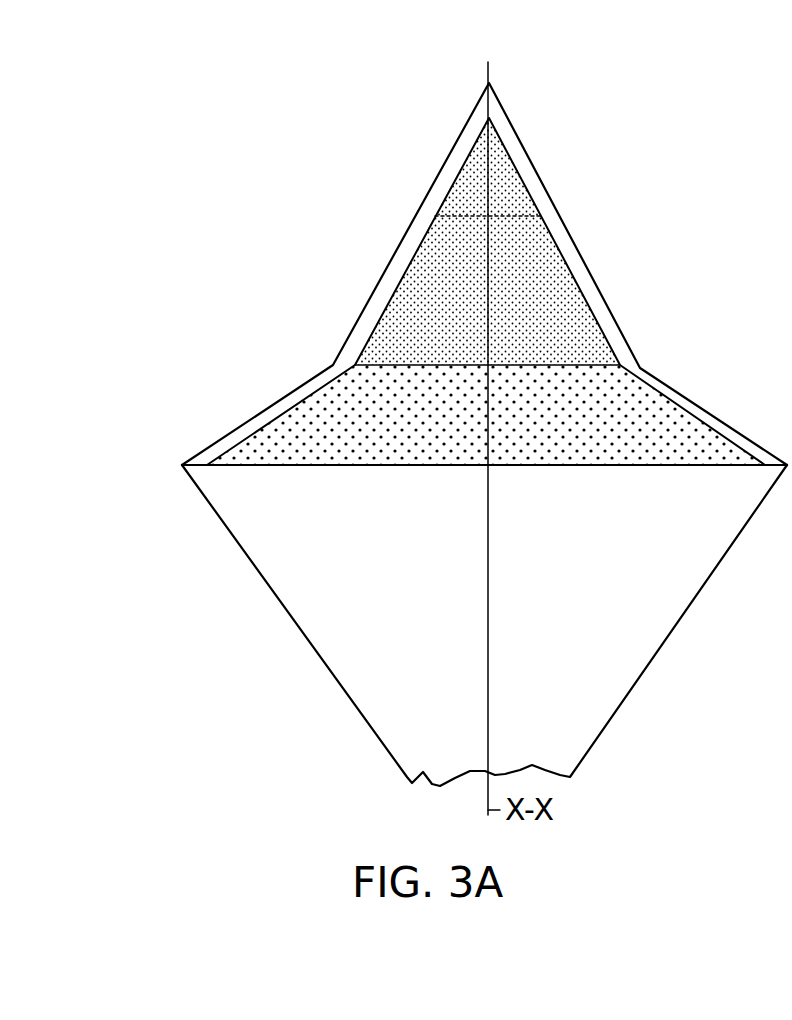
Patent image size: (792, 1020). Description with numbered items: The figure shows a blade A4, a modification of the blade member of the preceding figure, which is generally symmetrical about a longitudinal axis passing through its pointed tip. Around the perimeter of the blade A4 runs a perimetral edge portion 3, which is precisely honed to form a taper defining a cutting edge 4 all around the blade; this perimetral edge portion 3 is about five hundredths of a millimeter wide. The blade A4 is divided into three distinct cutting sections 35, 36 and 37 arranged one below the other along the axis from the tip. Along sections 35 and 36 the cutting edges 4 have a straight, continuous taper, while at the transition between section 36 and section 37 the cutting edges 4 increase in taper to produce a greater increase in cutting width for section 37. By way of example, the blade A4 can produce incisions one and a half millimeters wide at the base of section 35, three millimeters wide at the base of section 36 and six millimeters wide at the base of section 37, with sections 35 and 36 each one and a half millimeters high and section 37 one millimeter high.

The perimetral edge portion 3 is at (508, 137).
The cutting edge 4 is at (437, 175).
The cutting section 35 is at (478, 170).
The cutting section 36 is at (568, 317).
The cutting section 37 is at (308, 428).
The blade A4 is at (410, 222).